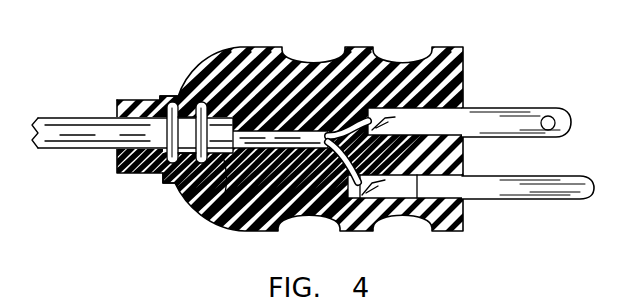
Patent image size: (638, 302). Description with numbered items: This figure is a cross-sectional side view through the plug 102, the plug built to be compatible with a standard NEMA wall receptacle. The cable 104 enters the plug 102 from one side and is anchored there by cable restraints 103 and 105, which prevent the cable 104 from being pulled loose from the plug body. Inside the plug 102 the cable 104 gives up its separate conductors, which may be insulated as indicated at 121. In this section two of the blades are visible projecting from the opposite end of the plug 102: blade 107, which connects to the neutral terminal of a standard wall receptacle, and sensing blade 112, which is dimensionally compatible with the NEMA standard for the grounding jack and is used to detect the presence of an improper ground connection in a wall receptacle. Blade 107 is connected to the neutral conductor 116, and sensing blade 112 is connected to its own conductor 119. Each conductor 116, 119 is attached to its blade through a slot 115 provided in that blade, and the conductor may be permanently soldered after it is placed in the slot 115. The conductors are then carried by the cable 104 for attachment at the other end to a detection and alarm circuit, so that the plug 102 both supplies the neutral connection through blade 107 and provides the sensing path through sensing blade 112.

The plug 102 is at (248, 40).
The cable restraint 103 is at (160, 99).
The cable 104 is at (90, 148).
The cable restraint 105 is at (184, 98).
The blade 107 is at (507, 107).
The sensing blade 112 is at (546, 200).
The slot 115 is at (455, 80).
The neutral conductor 116 is at (362, 108).
The conductor 119 is at (338, 165).
The insulation 121 is at (218, 210).